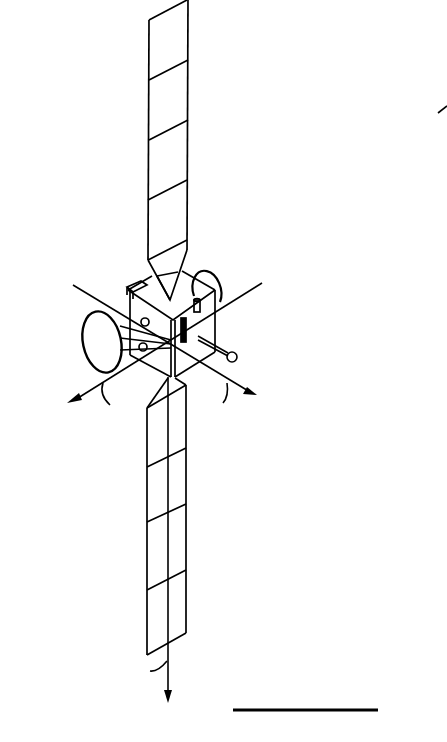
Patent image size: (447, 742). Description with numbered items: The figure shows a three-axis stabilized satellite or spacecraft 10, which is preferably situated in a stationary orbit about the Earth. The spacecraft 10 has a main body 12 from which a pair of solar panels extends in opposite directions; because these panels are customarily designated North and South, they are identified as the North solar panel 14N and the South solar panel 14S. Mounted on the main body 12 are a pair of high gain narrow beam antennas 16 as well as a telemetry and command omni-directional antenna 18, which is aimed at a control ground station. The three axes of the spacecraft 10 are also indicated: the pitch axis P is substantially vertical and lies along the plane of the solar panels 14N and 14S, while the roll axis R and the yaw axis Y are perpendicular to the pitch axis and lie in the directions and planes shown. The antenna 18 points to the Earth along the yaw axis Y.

The satellite or spacecraft 10 is at (280, 149).
The main body 12 is at (215, 330).
The North solar panel 14N is at (177, 107).
The South solar panel 14S is at (178, 522).
The high gain narrow beam antennas 16 is at (215, 265).
The telemetry and command omni-directional antenna 18 is at (238, 350).